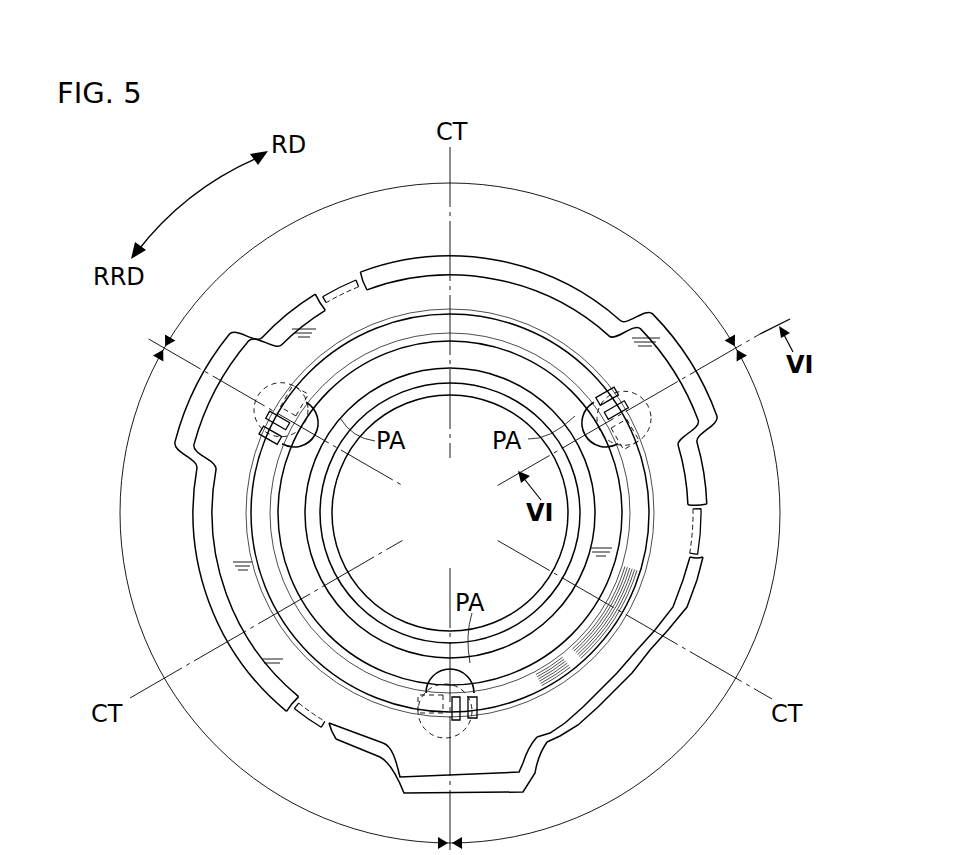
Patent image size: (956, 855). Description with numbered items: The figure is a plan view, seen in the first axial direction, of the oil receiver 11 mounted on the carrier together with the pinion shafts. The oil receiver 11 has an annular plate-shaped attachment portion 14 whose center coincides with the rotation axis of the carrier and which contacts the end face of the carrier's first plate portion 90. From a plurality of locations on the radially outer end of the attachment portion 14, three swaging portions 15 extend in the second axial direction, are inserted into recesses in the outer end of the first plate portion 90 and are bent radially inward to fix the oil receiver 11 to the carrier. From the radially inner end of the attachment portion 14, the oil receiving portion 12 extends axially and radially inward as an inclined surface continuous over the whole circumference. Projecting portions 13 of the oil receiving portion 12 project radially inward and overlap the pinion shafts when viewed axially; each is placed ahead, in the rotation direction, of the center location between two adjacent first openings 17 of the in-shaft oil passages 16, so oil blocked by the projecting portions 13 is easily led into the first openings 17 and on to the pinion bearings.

The oil receiver 11 is at (618, 668).
The oil receiving portion 12 is at (545, 674).
The projecting portion 13 is at (270, 420).
The attachment portion 14 is at (662, 603).
The swaging portion 15 is at (324, 292).
The in-shaft oil passage 16 is at (285, 390).
The first opening 17 is at (297, 450).
The first plate portion 90 is at (548, 285).